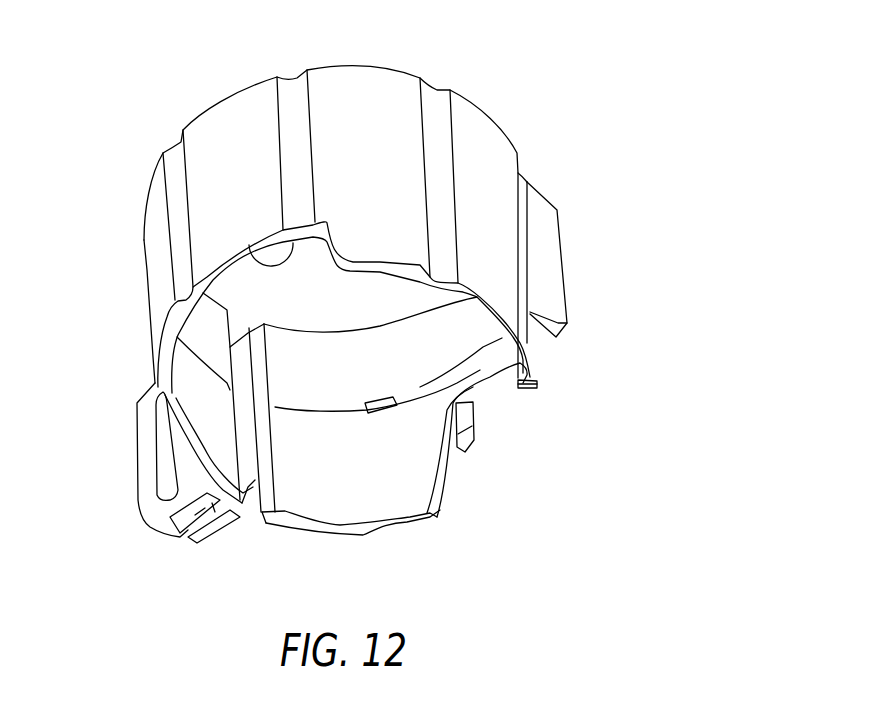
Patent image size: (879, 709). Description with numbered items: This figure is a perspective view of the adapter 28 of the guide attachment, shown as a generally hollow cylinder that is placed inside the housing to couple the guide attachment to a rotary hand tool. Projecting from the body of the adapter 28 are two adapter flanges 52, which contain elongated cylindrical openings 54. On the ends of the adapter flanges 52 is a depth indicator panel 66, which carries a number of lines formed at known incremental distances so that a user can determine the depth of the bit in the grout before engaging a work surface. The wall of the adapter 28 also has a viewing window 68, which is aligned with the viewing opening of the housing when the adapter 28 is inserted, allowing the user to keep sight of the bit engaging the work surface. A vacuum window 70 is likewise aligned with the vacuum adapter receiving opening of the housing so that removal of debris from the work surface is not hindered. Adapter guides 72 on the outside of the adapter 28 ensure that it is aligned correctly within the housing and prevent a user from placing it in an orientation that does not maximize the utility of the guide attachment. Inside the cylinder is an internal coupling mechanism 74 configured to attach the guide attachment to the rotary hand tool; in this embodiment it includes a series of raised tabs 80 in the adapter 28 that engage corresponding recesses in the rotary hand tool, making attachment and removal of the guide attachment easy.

The adapter 28 is at (487, 75).
The adapter flanges 52 is at (220, 542).
The elongated cylindrical openings 54 is at (173, 477).
The depth indicator panel 66 is at (137, 420).
The viewing window 68 is at (250, 253).
The vacuum window 70 is at (483, 385).
The adapter guides 72 is at (552, 265).
The internal coupling mechanism 74 is at (340, 438).
The raised tabs 80 is at (380, 412).